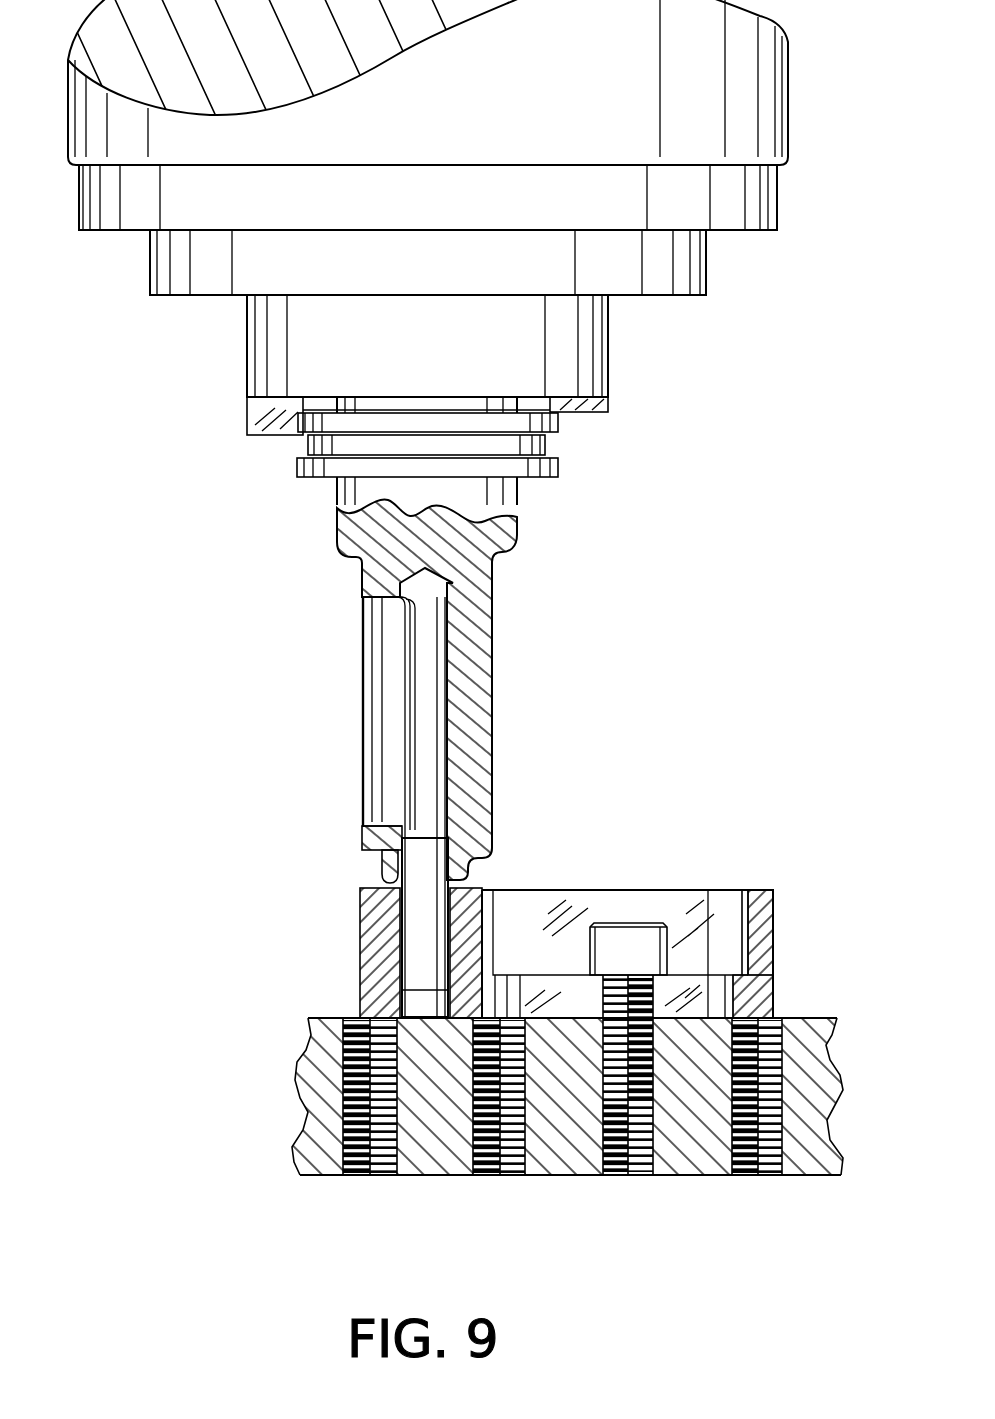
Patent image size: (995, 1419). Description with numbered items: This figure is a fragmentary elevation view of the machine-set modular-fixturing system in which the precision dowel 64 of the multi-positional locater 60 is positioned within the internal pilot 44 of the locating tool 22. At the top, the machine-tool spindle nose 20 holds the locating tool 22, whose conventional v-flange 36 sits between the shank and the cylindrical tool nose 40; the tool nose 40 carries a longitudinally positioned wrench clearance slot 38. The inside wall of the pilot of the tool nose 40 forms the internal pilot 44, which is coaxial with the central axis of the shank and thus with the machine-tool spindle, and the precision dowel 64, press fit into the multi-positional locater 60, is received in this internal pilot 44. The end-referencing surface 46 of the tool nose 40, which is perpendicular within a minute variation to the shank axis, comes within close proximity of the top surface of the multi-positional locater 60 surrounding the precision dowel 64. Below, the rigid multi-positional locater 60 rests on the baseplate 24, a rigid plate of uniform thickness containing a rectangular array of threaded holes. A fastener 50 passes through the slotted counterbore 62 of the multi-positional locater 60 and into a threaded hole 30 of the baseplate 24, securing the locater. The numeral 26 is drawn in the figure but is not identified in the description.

The machine-tool spindle nose 20 is at (240, 345).
The locating tool 22 is at (360, 635).
The baseplate 24 is at (302, 1112).
The housing 26 is at (325, 1018).
The threaded hole 30 is at (635, 1175).
The v-flange 36 is at (307, 447).
The wrench clearance slot 38 is at (390, 737).
The tool nose 40 is at (492, 682).
The internal pilot 44 is at (445, 792).
The end-referencing surface 46 is at (367, 882).
The fastener 50 is at (627, 923).
The multi-positional locater 60 is at (778, 968).
The slotted counterbore 62 is at (742, 905).
The precision dowel 64 is at (427, 842).